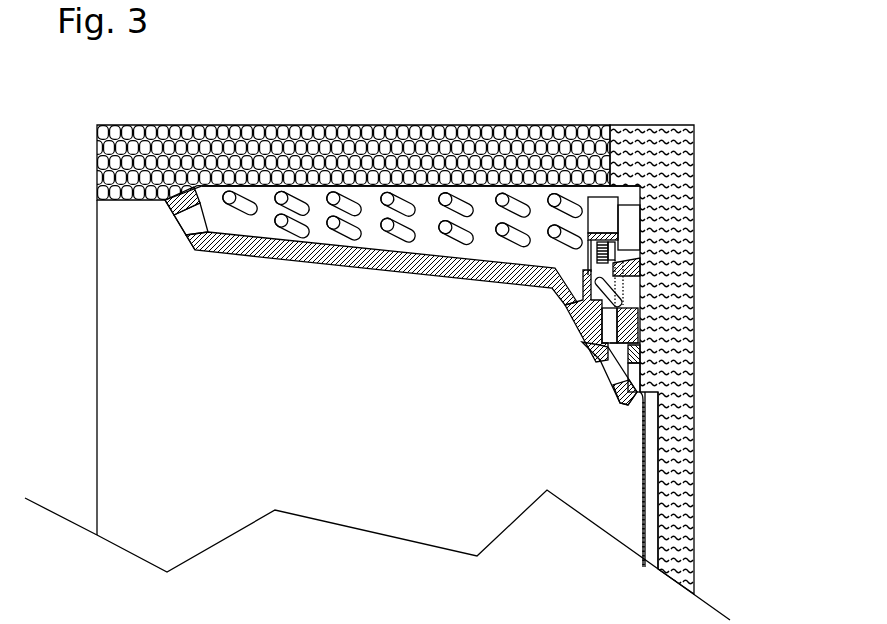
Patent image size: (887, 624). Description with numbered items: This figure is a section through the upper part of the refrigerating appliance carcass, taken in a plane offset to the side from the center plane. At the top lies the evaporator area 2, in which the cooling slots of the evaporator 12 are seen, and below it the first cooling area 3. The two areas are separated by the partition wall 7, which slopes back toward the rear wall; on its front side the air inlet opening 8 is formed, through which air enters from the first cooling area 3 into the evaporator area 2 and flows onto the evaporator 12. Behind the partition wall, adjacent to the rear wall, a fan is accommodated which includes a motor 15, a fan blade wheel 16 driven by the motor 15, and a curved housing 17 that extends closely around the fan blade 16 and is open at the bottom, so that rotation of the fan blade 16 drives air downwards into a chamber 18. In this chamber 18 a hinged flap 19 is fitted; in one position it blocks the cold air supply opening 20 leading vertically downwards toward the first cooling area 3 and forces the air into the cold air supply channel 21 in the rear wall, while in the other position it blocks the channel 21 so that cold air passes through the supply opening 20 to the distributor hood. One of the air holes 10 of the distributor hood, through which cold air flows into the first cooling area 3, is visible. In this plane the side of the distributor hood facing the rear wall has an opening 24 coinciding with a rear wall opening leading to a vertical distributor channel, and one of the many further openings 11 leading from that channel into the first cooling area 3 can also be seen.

The evaporator area 2 is at (427, 195).
The first cooling area 3 is at (343, 429).
The partition wall 7 is at (245, 255).
The air inlet opening 8 is at (192, 222).
The air holes 10 is at (603, 364).
The openings 11 is at (640, 492).
The evaporator 12 is at (358, 208).
The motor 15 is at (632, 232).
The fan blade wheel 16 is at (606, 258).
The housing 17 is at (602, 215).
The chamber 18 is at (603, 285).
The hinged flap 19 is at (585, 290).
The cold air supply opening 20 is at (608, 325).
The cold air supply channel 21 is at (653, 502).
The opening 24 is at (637, 362).